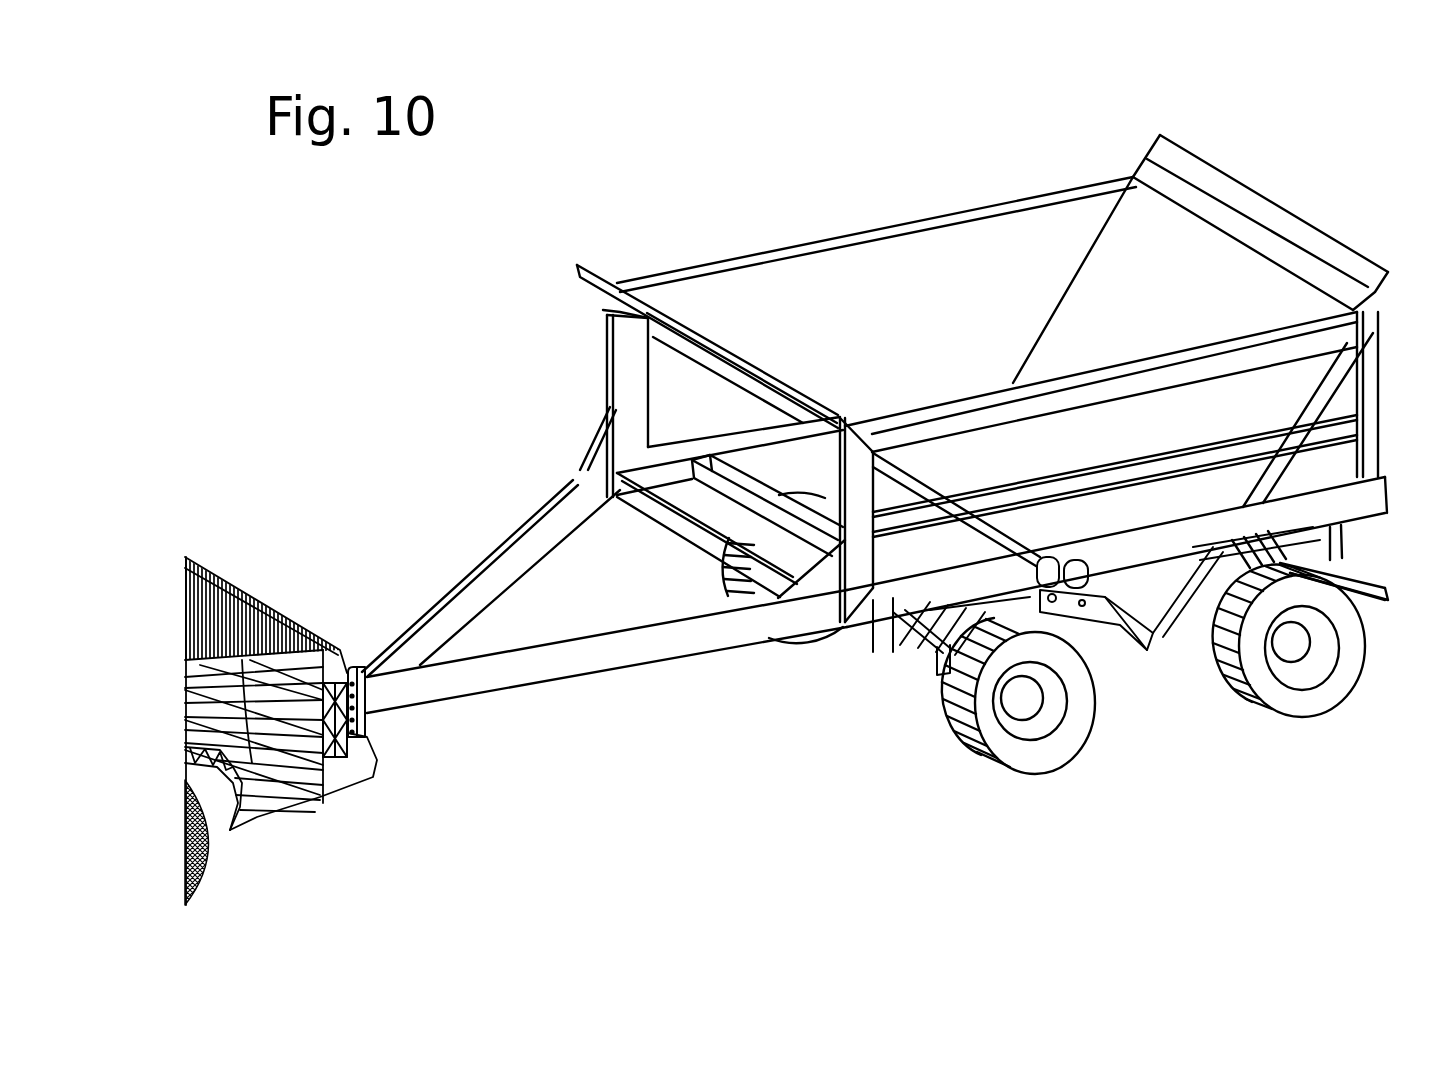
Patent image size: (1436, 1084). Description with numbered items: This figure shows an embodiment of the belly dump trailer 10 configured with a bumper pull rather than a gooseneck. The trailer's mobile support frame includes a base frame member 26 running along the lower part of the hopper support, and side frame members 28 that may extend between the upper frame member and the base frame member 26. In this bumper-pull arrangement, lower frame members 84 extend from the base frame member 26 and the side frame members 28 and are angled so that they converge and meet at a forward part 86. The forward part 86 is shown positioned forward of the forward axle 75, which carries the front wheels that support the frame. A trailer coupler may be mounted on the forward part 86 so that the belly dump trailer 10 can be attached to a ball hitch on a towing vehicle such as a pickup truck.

The belly dump trailer 10 is at (753, 187).
The base frame member 26 is at (670, 463).
The side frame members 28 is at (627, 357).
The forward axle 75 is at (918, 638).
The lower frame members 84 is at (500, 575).
The forward part 86 is at (362, 667).